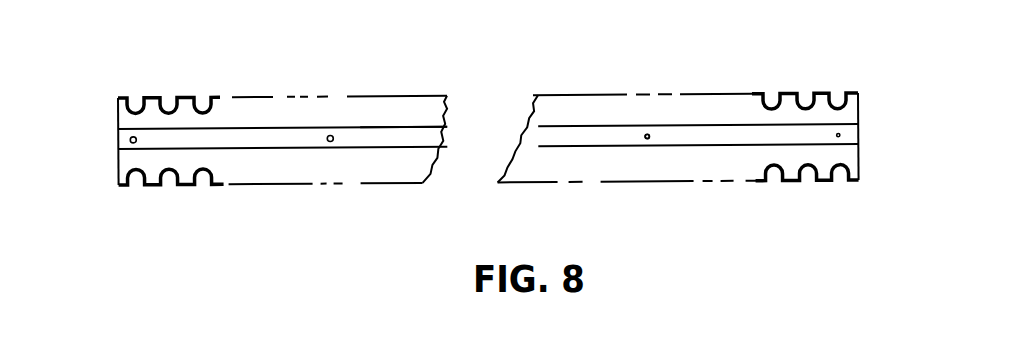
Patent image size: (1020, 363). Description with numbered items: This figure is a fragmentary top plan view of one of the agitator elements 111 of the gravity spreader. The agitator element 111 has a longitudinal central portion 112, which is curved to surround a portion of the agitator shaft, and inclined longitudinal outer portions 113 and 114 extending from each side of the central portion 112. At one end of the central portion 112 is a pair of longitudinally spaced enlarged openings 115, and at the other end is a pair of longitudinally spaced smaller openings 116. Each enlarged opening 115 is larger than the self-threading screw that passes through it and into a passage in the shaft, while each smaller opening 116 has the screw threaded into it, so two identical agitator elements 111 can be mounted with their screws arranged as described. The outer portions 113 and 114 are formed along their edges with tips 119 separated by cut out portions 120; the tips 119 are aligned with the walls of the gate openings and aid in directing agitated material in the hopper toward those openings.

The agitator element 111 is at (114, 168).
The longitudinal central portion 112 is at (401, 128).
The inclined longitudinal outer portion 113 is at (275, 117).
The inclined longitudinal outer portion 114 is at (263, 167).
The enlarged opening 115 is at (332, 136).
The smaller opening 116 is at (649, 135).
The tip 119 is at (188, 95).
The cut out portion 120 is at (131, 108).